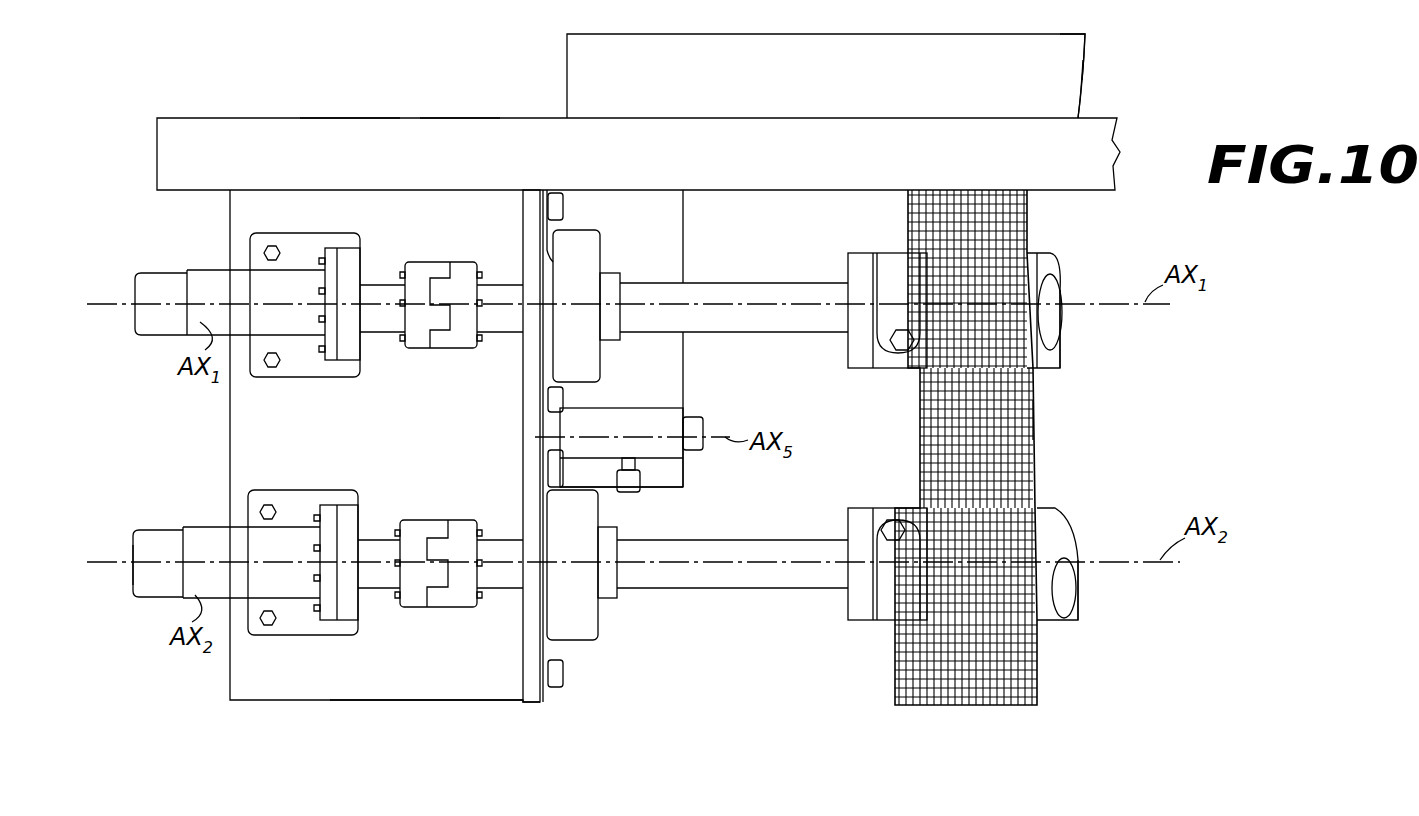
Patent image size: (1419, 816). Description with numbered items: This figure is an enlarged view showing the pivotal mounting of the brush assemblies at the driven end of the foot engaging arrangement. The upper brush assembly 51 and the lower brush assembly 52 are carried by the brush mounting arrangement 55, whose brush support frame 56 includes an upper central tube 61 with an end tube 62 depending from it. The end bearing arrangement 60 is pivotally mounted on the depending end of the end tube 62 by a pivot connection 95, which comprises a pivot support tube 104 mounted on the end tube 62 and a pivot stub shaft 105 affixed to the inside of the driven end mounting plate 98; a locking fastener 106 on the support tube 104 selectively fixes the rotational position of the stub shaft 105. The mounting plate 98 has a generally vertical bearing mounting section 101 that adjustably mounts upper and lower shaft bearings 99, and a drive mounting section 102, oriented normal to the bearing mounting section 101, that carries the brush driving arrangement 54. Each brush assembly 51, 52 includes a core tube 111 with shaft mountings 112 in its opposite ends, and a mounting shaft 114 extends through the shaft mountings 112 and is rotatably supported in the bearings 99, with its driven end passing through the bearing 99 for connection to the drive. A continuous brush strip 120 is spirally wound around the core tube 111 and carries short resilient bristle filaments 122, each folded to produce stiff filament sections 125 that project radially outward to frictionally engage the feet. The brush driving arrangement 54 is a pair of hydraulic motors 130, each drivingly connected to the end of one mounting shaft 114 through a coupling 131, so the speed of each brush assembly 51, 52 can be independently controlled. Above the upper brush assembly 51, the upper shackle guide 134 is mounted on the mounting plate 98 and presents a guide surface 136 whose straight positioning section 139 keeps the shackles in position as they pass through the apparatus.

The upper brush assembly 51 is at (1065, 322).
The lower brush assembly 52 is at (1090, 537).
The brush driving arrangement 54 is at (165, 518).
The brush mounting arrangement 55 is at (1084, 88).
The brush support frame 56 is at (1086, 36).
The end bearing arrangement 60 is at (560, 648).
The upper central tube 61 is at (978, 44).
The end tube 62 is at (685, 220).
The pivot connection 95 is at (688, 462).
The mounting plate 98 is at (325, 698).
The shaft bearing 99 is at (597, 362).
The bearing mounting section 101 is at (530, 682).
The drive mounting section 102 is at (380, 696).
The pivot support tube 104 is at (655, 412).
The pivot stub shaft 105 is at (703, 422).
The locking fastener 106 is at (642, 490).
The core tube 111 is at (908, 368).
The shaft mounting 112 is at (850, 262).
The mounting shaft 114 is at (760, 290).
The brush strip 120 is at (1030, 256).
The bristle filament 122 is at (1040, 397).
The filament section 125 is at (1040, 418).
The hydraulic motor 130 is at (190, 270).
The coupling 131 is at (444, 270).
The upper shackle guide 134 is at (356, 117).
The guide surface 136 is at (461, 125).
The positioning section 139 is at (503, 170).